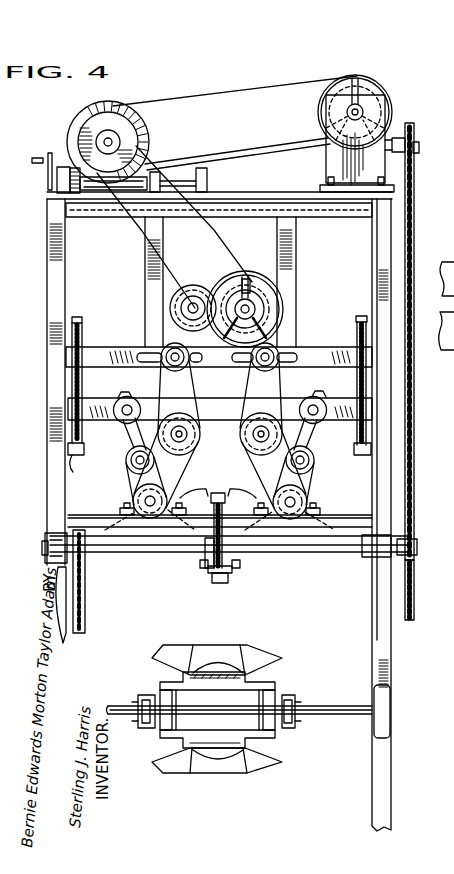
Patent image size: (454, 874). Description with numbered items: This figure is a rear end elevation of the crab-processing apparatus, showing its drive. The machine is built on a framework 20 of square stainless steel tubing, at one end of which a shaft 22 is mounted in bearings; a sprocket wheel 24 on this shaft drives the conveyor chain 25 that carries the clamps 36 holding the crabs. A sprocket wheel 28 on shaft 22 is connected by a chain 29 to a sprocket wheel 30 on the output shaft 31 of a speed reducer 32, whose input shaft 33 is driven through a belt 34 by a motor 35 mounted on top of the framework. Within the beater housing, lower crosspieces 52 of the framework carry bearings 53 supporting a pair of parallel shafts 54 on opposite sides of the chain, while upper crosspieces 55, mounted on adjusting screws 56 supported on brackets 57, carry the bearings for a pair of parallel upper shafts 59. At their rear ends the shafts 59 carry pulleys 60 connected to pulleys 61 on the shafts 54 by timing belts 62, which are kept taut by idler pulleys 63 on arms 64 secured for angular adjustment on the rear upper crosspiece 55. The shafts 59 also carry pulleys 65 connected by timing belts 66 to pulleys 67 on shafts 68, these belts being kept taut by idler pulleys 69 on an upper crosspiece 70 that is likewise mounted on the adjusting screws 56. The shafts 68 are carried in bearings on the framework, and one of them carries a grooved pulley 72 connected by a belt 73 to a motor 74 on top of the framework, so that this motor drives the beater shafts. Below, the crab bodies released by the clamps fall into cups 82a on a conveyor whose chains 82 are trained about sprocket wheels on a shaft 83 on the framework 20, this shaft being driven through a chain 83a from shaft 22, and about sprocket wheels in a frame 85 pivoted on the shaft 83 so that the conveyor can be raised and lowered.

The framework 20 is at (47, 304).
The shaft 22 is at (306, 550).
The sprocket wheel 24 is at (208, 558).
The conveyor chain 25 is at (232, 568).
The sprocket wheel 28 is at (414, 584).
The chain 29 is at (414, 195).
The sprocket wheel 30 is at (392, 130).
The output shaft 31 is at (419, 147).
The speed reducer 32 is at (343, 135).
The input shaft 33 is at (372, 100).
The belt 34 is at (197, 96).
The motor 35 is at (126, 101).
The clamp 36 is at (209, 594).
The lower crosspiece 52 is at (366, 520).
The bearing 53 is at (130, 515).
The shaft 54 is at (152, 505).
The upper crosspiece 55 is at (85, 403).
The adjusting screw 56 is at (75, 318).
The bracket 57 is at (74, 460).
The shaft 59 is at (186, 434).
The pulley 60 is at (203, 433).
The pulley 61 is at (304, 500).
The timing belt 62 is at (130, 482).
The idler pulley 63 is at (127, 461).
The arm 64 is at (128, 438).
The pulley 65 is at (171, 412).
The timing belt 66 is at (163, 381).
The pulley 67 is at (268, 307).
The shaft 68 is at (246, 278).
The idler pulley 69 is at (163, 352).
The upper crosspiece 70 is at (345, 353).
The grooved pulley 72 is at (281, 292).
The belt 73 is at (218, 224).
The motor 74 is at (86, 129).
The chain 82 is at (176, 690).
The cup 82a is at (252, 655).
The shaft 83 is at (312, 708).
The chain 83a is at (85, 601).
The frame 85 is at (143, 692).